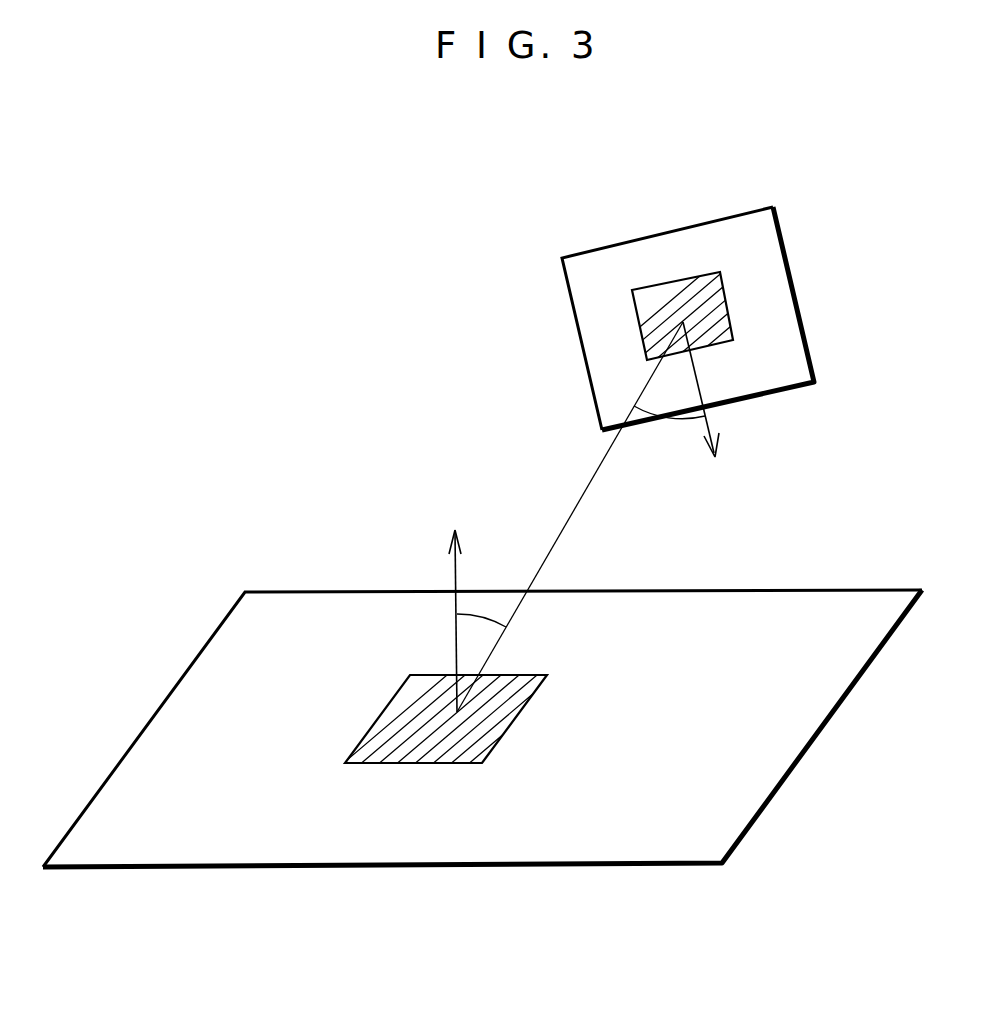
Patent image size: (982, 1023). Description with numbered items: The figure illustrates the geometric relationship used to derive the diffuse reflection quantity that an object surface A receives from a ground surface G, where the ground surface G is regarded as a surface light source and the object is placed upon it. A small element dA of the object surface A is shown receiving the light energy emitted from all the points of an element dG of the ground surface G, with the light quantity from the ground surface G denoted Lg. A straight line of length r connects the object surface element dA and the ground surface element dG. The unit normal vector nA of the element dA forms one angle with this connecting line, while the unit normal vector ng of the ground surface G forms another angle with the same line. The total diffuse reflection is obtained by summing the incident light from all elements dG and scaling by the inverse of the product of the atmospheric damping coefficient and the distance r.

The object surface A is at (688, 301).
The element of the object surface dA is at (735, 315).
The unit normal vector of dA nA is at (708, 407).
The distance between dA and dG r is at (570, 517).
The light quantity from the ground surface Lg is at (307, 635).
The unit normal vector of the ground surface ng is at (471, 598).
The element of the ground surface dG is at (517, 715).
The ground surface G is at (482, 753).